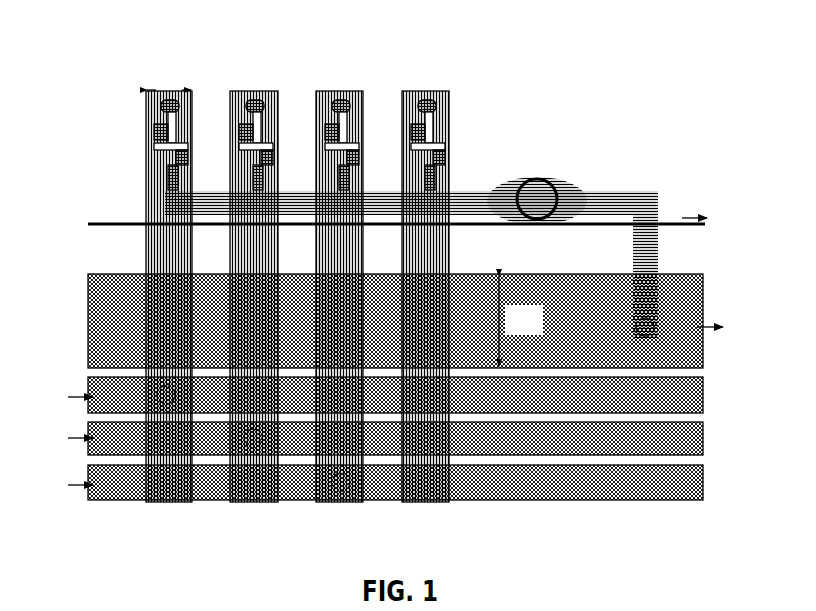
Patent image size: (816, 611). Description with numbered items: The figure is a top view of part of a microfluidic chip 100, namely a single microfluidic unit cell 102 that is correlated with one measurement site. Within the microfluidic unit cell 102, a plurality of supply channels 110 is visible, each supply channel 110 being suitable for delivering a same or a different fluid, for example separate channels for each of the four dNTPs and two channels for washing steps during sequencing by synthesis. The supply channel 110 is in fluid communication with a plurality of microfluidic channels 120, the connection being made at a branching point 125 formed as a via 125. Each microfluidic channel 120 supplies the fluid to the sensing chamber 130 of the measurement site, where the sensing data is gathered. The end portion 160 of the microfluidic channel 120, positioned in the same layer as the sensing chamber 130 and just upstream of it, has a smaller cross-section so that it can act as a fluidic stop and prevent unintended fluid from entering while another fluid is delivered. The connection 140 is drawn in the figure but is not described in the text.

The microfluidic chip 100 is at (395, 284).
The microfluidic unit cell 102 is at (259, 284).
The supply channel 110 is at (703, 393).
The microfluidic channel 120 is at (168, 502).
The branching point (via) 125 is at (160, 391).
The sensing chamber 130 is at (560, 180).
The select line connection 140 is at (677, 297).
The portion with smaller cross-section 160 is at (155, 127).